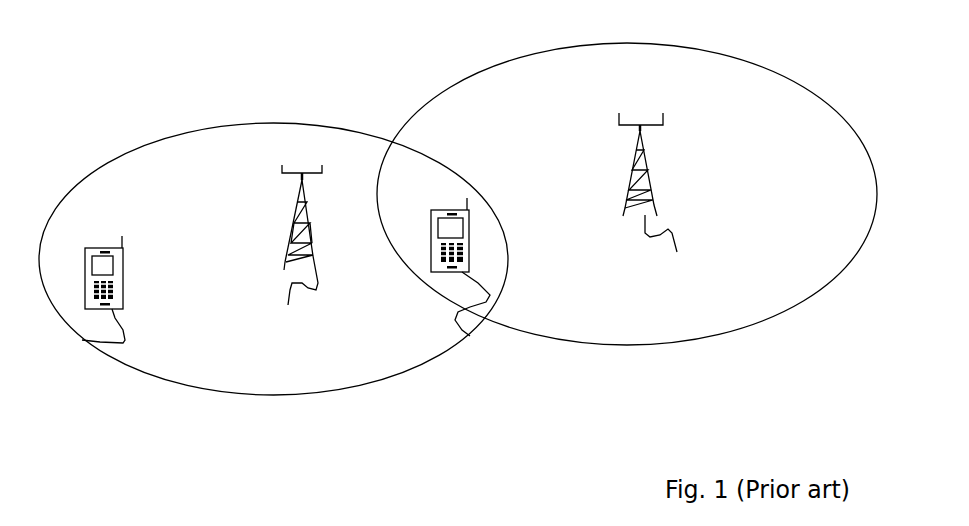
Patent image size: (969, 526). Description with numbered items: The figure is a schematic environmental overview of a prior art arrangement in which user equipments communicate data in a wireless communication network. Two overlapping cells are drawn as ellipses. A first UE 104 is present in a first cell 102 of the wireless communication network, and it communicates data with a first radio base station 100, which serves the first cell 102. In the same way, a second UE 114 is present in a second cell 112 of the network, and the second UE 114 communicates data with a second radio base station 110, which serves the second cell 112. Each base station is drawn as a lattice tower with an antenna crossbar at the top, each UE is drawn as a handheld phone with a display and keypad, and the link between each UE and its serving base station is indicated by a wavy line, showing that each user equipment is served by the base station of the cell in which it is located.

The first radio base station 100 is at (304, 255).
The first cell 102 is at (214, 106).
The first UE 104 is at (80, 340).
The second radio base station 110 is at (664, 204).
The second cell 112 is at (451, 64).
The second UE 114 is at (470, 336).